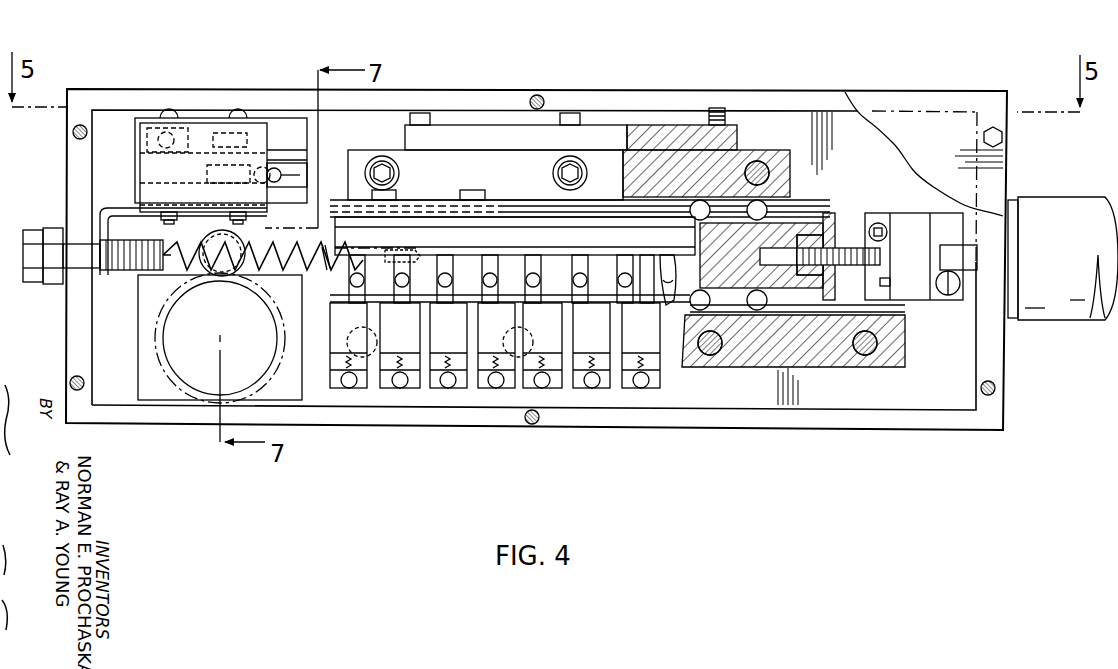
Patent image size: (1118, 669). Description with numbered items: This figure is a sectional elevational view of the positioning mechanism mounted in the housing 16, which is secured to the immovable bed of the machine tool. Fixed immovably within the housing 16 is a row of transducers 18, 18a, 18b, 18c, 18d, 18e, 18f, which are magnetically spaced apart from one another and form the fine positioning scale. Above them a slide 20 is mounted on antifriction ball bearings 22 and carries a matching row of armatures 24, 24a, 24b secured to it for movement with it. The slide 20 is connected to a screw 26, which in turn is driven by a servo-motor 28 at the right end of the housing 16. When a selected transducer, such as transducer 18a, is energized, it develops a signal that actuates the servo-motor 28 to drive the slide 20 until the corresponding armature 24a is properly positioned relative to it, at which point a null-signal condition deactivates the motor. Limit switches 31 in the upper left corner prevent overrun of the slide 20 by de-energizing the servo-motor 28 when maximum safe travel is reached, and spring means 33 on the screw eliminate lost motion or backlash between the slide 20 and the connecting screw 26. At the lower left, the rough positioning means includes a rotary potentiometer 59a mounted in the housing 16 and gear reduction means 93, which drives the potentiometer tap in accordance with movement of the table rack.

The housing 16 is at (100, 428).
The transducer 18 is at (340, 390).
The transducer 18a is at (405, 390).
The transducer 18b is at (455, 390).
The transducer 18c is at (505, 390).
The transducer 18d is at (550, 390).
The transducer 18e is at (605, 390).
The transducer 18f is at (648, 390).
The slide 20 is at (822, 232).
The ball bearings 22 is at (765, 212).
The armature 24 is at (357, 292).
The armature 24a is at (390, 258).
The armature 24b is at (452, 258).
The screw 26 is at (855, 266).
The servo-motor 28 is at (1045, 316).
The limit switches 31 is at (202, 160).
The spring means 33 is at (279, 258).
The rotary potentiometer 59a is at (193, 380).
The gear reduction means 93 is at (147, 352).